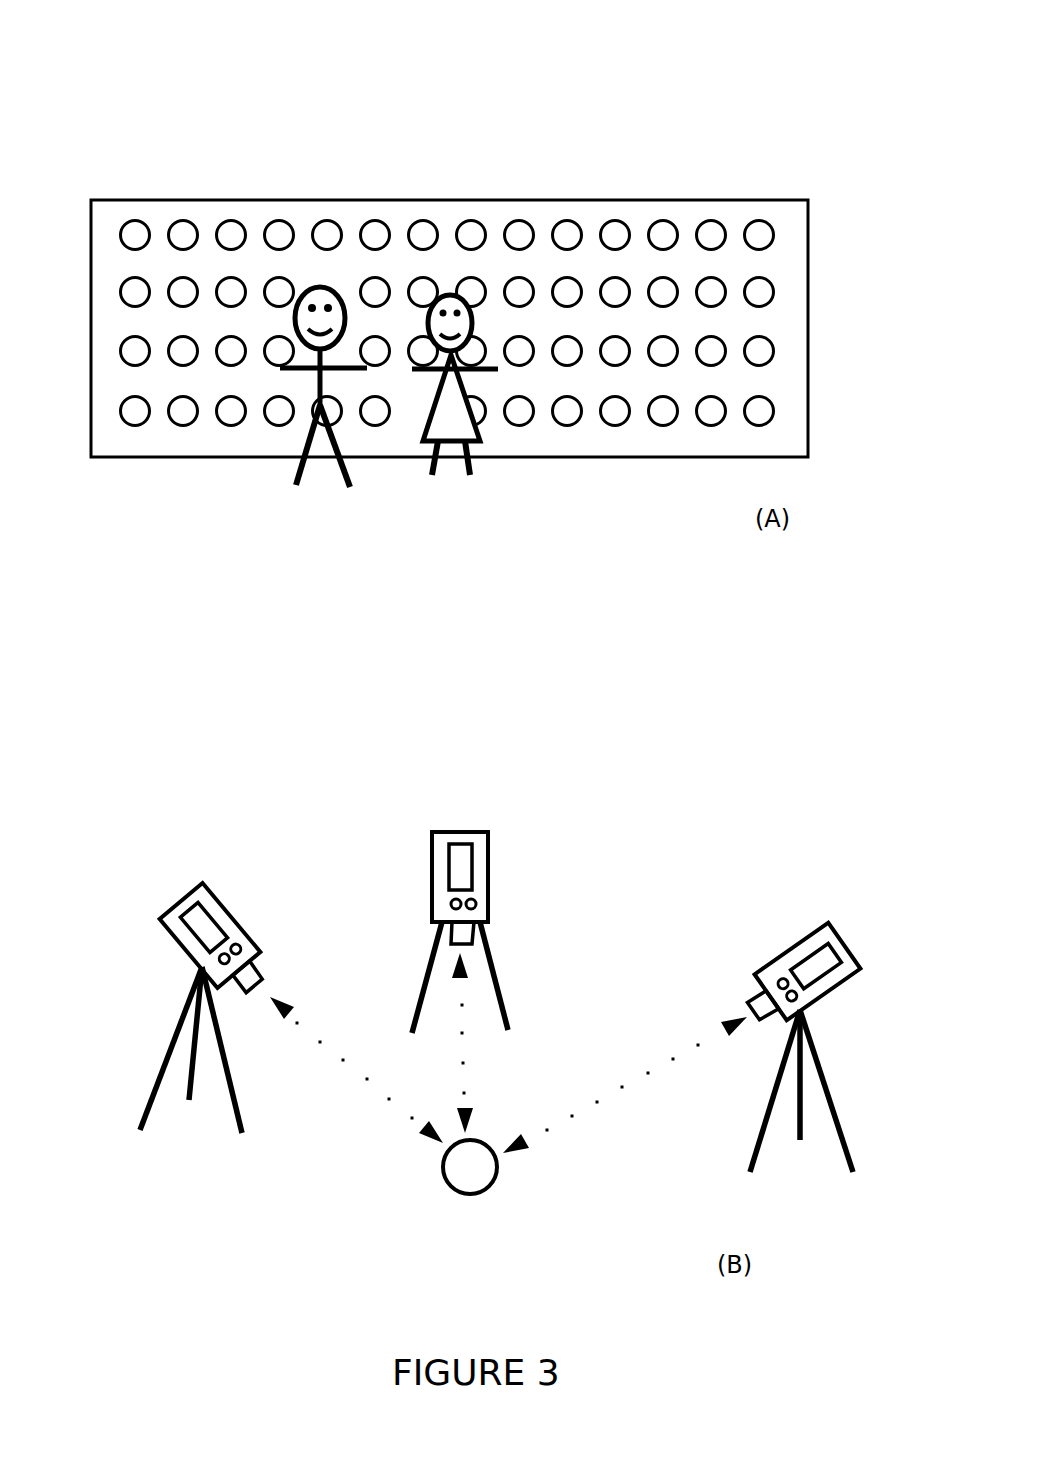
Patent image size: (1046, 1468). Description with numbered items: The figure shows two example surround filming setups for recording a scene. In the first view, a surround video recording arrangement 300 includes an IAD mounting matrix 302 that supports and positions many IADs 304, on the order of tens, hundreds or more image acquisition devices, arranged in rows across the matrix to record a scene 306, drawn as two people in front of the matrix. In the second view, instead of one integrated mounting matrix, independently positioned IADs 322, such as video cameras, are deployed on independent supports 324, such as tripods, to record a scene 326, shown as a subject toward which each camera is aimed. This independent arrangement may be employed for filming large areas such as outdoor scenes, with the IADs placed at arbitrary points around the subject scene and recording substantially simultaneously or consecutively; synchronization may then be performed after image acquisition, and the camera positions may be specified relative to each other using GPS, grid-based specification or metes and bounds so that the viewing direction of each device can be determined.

In FIG. 3A, the surround video recording arrangement 300 is at (456, 118).
In FIG. 3A, the IAD mounting matrix 302 is at (197, 200).
In FIG. 3A, the IADs 304 is at (776, 289).
In FIG. 3A, the scene 306 is at (437, 475).
In FIG. 3B, the independently positioned IADs 322 is at (432, 888).
In FIG. 3B, the independent supports 324 is at (157, 1055).
In FIG. 3B, the scene 326 is at (451, 1193).